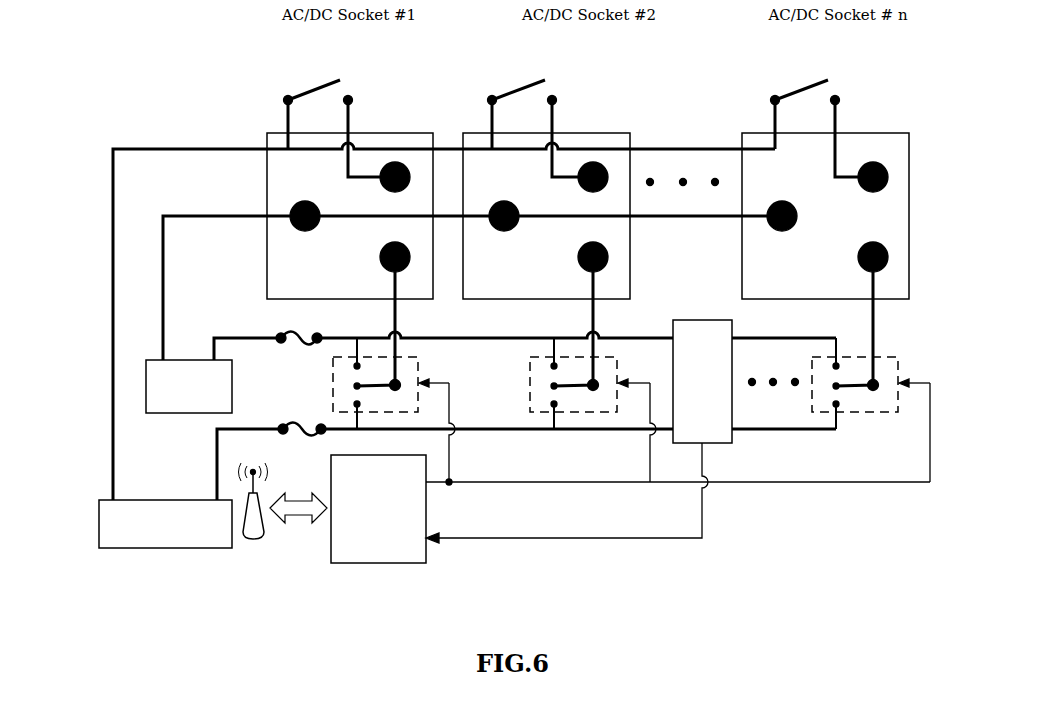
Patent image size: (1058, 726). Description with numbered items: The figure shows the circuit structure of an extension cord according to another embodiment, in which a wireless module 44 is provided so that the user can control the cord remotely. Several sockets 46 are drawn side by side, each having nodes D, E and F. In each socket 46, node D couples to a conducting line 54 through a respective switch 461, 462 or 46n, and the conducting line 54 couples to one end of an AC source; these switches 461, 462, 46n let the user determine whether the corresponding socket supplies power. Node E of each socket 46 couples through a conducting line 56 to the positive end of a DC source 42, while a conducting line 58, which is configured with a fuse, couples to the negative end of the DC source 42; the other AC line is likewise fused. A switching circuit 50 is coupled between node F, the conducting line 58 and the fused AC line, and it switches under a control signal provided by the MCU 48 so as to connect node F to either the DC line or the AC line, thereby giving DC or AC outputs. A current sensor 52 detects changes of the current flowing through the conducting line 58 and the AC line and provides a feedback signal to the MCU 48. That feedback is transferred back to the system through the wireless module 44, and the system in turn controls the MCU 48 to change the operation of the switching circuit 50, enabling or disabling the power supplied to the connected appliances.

The DC source 42 is at (232, 373).
The wireless module 44 is at (264, 536).
The socket 46 is at (374, 133).
The switch 461 is at (330, 66).
The switch 462 is at (545, 66).
The switch 46n is at (814, 66).
The micro processor (MCU) 48 is at (426, 554).
The switching circuit 50 is at (418, 358).
The current sensor 52 is at (732, 432).
The conducting line 54 is at (198, 147).
The conducting line 56 is at (163, 234).
The conducting line 58 is at (247, 338).